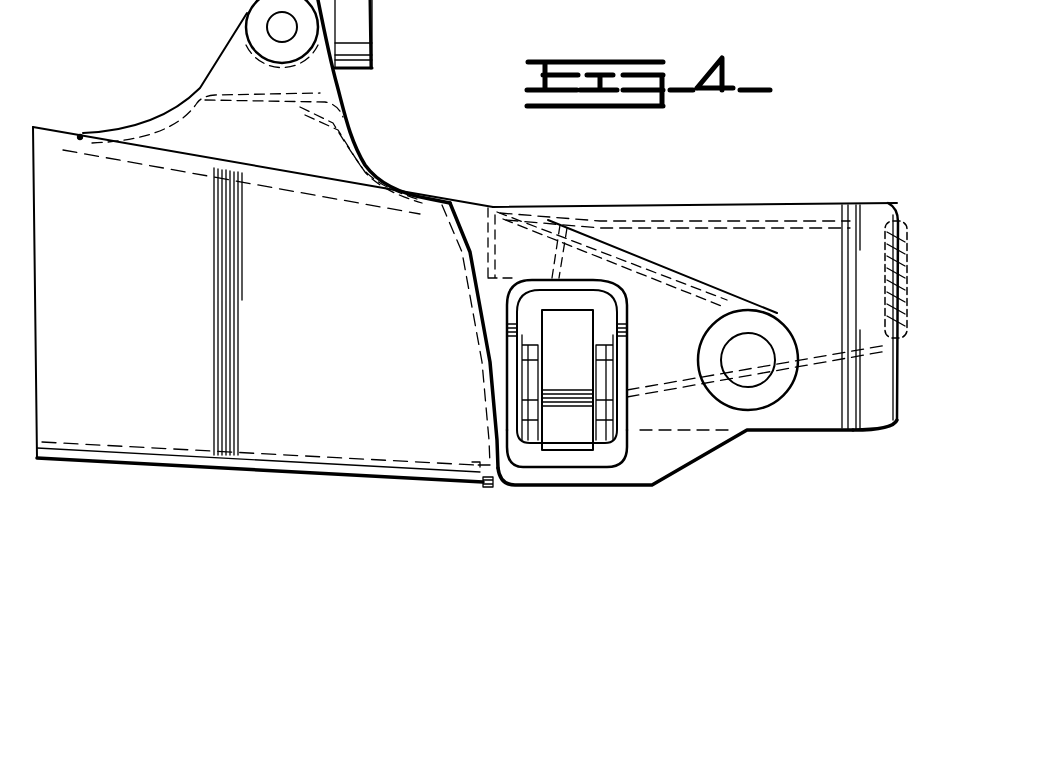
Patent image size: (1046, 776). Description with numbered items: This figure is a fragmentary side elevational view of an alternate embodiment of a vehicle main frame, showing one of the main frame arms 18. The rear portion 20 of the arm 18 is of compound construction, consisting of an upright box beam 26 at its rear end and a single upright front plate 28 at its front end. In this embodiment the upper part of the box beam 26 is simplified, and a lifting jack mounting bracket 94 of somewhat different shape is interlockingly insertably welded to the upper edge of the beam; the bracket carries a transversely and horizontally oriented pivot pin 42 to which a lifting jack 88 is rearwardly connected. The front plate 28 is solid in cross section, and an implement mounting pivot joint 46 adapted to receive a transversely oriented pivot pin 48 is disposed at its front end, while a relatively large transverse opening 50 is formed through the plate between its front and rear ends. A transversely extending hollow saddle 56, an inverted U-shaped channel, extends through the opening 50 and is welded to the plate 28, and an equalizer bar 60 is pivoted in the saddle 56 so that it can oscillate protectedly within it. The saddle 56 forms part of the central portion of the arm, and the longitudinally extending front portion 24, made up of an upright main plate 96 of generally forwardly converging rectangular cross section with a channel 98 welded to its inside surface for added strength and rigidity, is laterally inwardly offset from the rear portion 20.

The main frame arm 18 is at (383, 483).
The rear portion 20 is at (198, 471).
The front portion 24 is at (853, 435).
The box beam 26 is at (137, 435).
The front plate 28 is at (653, 463).
The pivot pin 42 is at (278, 27).
The implement mounting pivot joint 46 is at (778, 306).
The pivot pin 48 is at (745, 377).
The transverse opening 50 is at (528, 458).
The saddle 56 is at (520, 290).
The equalizer bar 60 is at (590, 326).
The lifting jack 88 is at (362, 33).
The lifting jack mounting bracket 94 is at (327, 97).
The main plate 96 is at (877, 377).
The channel 98 is at (908, 262).